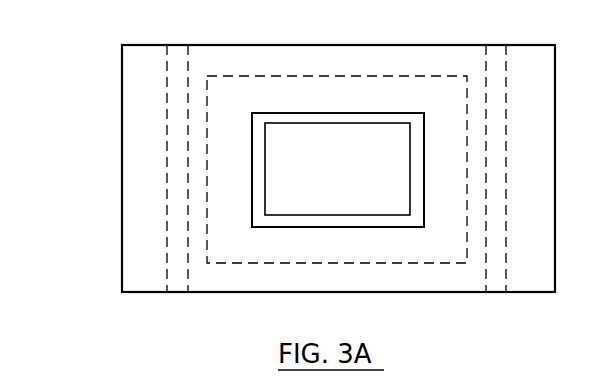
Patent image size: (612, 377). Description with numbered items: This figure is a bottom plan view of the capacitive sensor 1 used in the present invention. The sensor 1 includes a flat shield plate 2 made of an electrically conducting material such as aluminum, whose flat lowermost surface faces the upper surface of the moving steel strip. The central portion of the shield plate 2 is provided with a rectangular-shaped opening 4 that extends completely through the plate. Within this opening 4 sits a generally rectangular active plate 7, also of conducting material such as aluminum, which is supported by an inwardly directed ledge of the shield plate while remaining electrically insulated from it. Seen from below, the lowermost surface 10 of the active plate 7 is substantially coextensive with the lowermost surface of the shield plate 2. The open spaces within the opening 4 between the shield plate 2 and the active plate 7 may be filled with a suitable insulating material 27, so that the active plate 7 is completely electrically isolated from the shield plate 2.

The sensor 1 is at (110, 164).
The shield plate 2 is at (203, 53).
The rectangular-shaped opening 4 is at (337, 114).
The active plate 7 is at (306, 127).
The lowermost surface of active plate 10 is at (348, 183).
The insulating material 27 is at (324, 204).